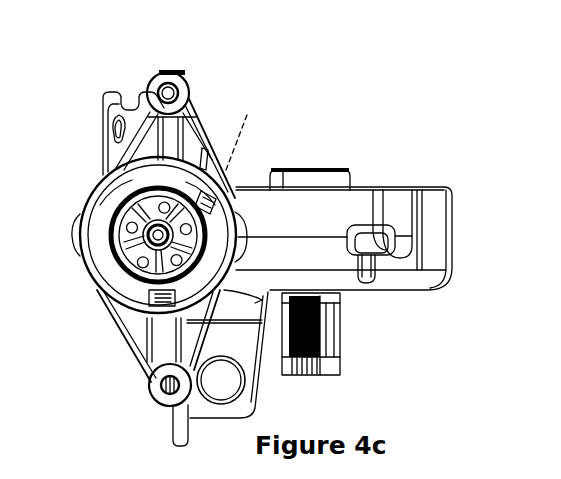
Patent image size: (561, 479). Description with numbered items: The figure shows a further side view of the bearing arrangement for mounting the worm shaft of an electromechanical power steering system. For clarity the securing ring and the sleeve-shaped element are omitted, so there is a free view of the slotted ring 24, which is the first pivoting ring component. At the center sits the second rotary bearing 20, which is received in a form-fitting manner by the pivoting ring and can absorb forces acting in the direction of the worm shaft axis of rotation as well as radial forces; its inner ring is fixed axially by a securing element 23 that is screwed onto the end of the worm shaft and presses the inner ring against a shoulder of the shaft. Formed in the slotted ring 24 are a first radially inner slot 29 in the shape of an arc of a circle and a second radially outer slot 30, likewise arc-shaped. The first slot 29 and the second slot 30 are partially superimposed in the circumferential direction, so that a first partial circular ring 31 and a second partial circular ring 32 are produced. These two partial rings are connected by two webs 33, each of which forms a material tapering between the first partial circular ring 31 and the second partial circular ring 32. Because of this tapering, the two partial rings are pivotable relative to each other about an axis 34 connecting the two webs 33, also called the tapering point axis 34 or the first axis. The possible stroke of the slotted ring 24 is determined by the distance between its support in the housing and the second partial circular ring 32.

The second rotary bearing 20 is at (112, 248).
The securing element 23 is at (118, 237).
The slotted ring 24 is at (107, 200).
The first radially inner slot 29 is at (137, 183).
The second radially outer slot 30 is at (208, 328).
The first partial circular ring 31 is at (197, 182).
The second partial circular ring 32 is at (222, 230).
The webs 33 is at (150, 300).
The tapering point axis 34 is at (121, 390).